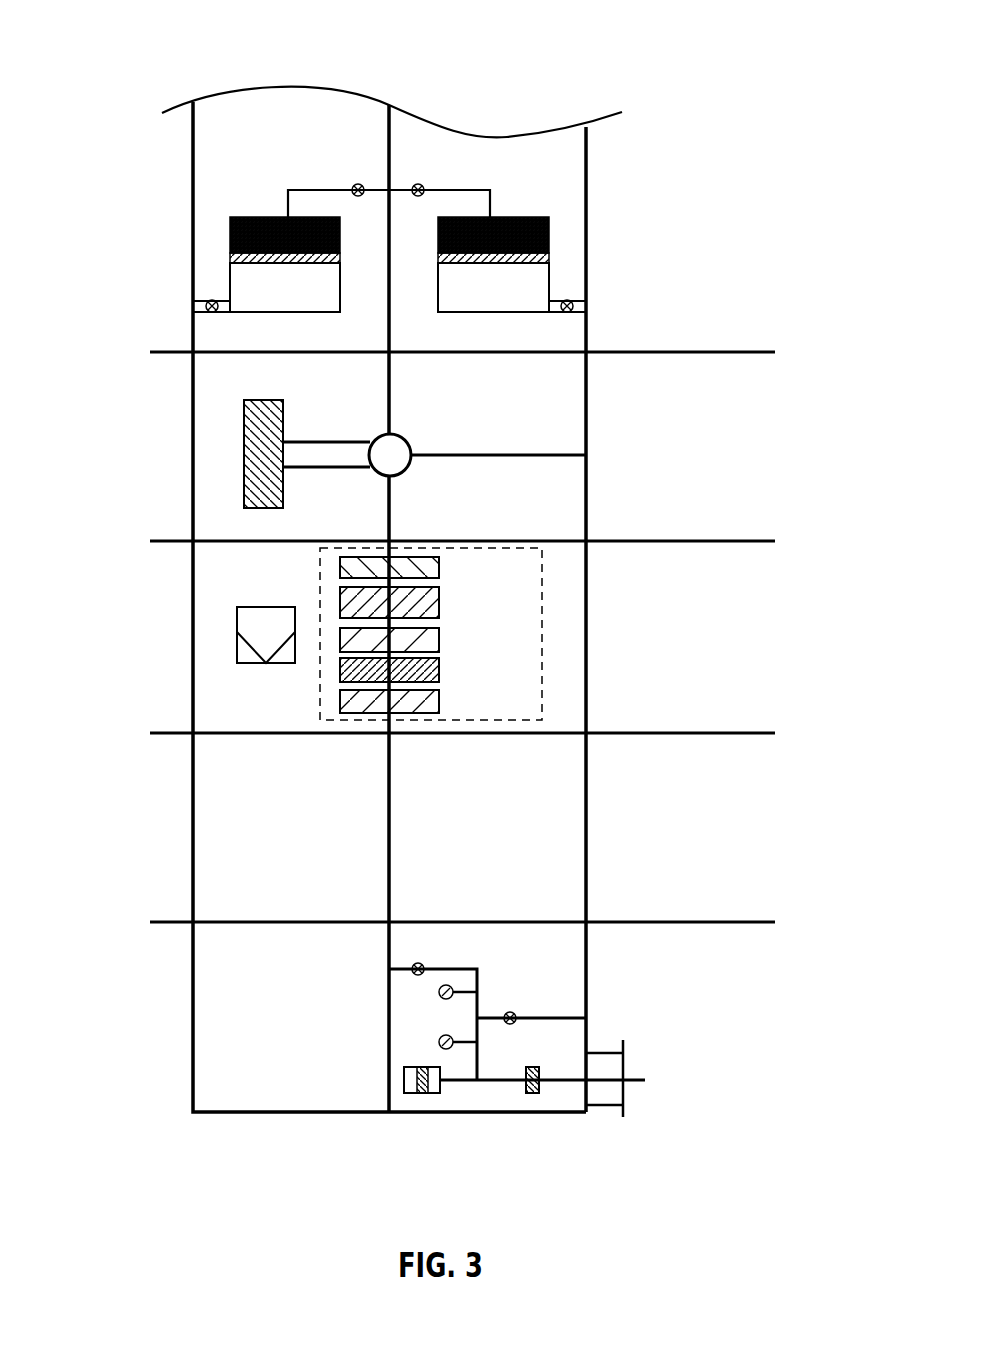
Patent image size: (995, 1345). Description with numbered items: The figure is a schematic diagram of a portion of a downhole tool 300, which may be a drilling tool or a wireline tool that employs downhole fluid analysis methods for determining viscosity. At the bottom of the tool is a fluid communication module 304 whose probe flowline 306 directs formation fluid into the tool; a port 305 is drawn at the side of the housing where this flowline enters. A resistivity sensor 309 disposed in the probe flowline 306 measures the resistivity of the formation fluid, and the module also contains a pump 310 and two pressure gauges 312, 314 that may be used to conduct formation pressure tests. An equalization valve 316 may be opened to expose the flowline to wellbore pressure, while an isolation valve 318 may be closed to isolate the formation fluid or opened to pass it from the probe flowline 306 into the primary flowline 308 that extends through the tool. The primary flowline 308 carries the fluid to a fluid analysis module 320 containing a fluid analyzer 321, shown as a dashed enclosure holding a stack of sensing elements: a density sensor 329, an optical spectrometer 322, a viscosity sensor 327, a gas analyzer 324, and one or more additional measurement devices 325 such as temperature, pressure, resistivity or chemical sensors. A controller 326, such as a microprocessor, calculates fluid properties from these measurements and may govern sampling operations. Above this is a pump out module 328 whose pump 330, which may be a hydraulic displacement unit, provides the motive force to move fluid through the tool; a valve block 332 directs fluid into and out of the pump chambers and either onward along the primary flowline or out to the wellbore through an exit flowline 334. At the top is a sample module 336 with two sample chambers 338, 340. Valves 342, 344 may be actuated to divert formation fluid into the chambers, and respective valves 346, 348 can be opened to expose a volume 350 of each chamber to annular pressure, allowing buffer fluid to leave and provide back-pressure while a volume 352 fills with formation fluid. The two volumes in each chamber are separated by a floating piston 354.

The downhole tool 300 is at (128, 32).
The fluid communication module 304 is at (193, 1022).
The fluid port 305 is at (625, 1067).
The probe flowline 306 is at (503, 1082).
The primary flowline 308 is at (389, 830).
The resistivity sensor 309 is at (531, 1094).
The pump 310 is at (422, 1094).
The pressure gauge 312 is at (438, 1043).
The pressure gauge 314 is at (438, 993).
The equalization valve 316 is at (512, 1011).
The isolation valve 318 is at (420, 962).
The fluid analysis module 320 is at (586, 640).
The fluid analyzer 321 is at (318, 687).
The optical spectrometer 322 is at (439, 612).
The gas analyzer 324 is at (439, 670).
The measurement devices 325 is at (439, 703).
The controller 326 is at (237, 625).
The viscosity sensor 327 is at (439, 640).
The pump out module 328 is at (588, 407).
The density sensor 329 is at (439, 577).
The pump 330 is at (244, 457).
The valve block 332 is at (404, 438).
The exit flowline 334 is at (488, 458).
The sample module 336 is at (586, 333).
The sample chamber 338 is at (549, 280).
The sample chamber 340 is at (230, 280).
The valve 342 is at (357, 184).
The valve 344 is at (419, 184).
The valve 346 is at (211, 300).
The valve 348 is at (568, 300).
The volume 350 is at (285, 288).
The volume 352 is at (278, 215).
The floating piston 354 is at (230, 258).